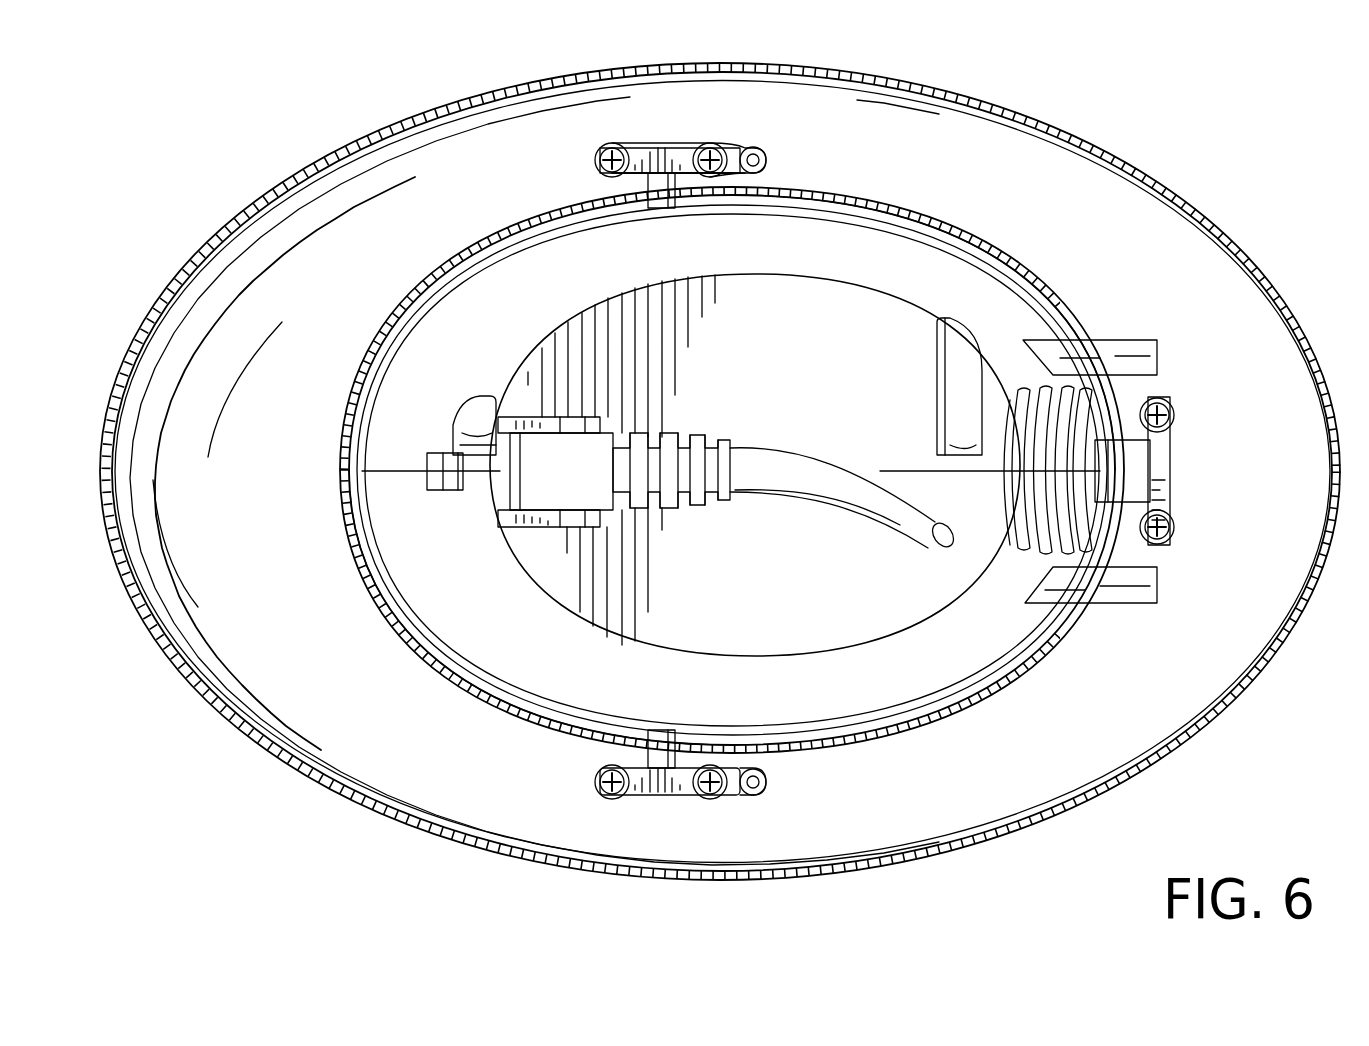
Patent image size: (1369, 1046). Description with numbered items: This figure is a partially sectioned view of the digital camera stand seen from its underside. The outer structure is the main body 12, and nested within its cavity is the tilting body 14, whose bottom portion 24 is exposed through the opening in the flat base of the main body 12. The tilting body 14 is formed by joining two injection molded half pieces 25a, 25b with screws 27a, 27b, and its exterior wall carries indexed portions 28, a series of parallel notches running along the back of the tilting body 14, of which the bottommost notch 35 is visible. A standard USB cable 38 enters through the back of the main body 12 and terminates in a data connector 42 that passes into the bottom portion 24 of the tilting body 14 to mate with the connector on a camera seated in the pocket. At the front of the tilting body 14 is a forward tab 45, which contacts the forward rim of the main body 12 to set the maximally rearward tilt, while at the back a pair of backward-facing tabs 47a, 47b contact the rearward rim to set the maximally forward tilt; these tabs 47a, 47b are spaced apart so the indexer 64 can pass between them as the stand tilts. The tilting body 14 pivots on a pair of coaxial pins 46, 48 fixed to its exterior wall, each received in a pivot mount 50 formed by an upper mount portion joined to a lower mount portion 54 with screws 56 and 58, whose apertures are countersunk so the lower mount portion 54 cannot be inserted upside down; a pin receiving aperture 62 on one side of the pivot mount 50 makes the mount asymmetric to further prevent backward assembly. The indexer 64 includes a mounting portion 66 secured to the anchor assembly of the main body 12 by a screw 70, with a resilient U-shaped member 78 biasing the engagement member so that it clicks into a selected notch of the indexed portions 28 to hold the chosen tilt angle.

The main body 12 is at (296, 170).
The tilting body 14 is at (373, 615).
The bottom portion 24 is at (777, 388).
The half piece 25a is at (858, 256).
The half piece 25b is at (528, 665).
The screw 27a is at (472, 447).
The screw 27b is at (960, 440).
The indexed portions 28 is at (1020, 568).
The notch 35 is at (1042, 488).
The USB cable 38 is at (827, 503).
The data connector 42 is at (607, 517).
The forward tab 45 is at (437, 490).
The pin 46 is at (662, 206).
The backward-facing tab 47a is at (1112, 340).
The backward-facing tab 47b is at (1112, 603).
The pin 48 is at (663, 730).
The pivot mount 50 is at (671, 176).
The lower mount portion 54 is at (689, 766).
The screw 56 is at (612, 143).
The screw 58 is at (712, 143).
The pin receiving aperture 62 is at (760, 150).
The indexer 64 is at (1177, 487).
The mounting portion 66 is at (1172, 482).
The screw 70 is at (1178, 405).
The U-shaped member 78 is at (1150, 465).